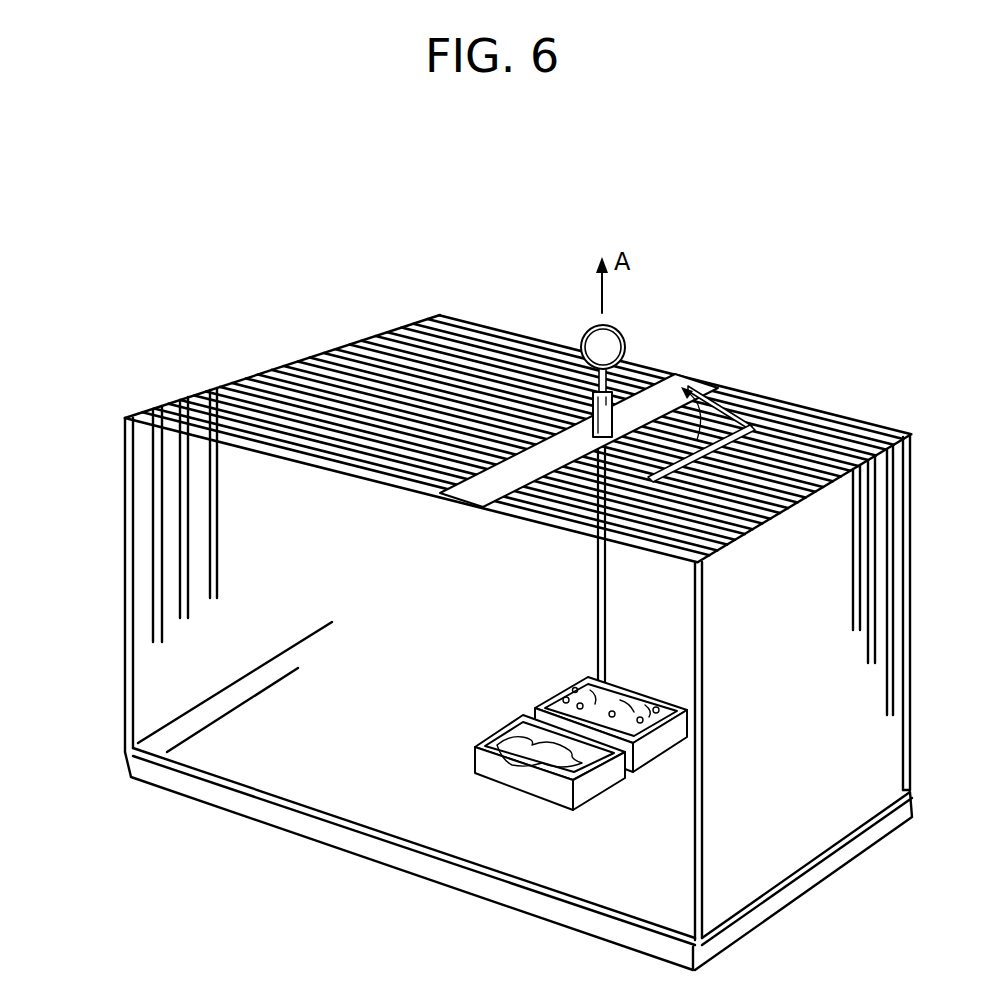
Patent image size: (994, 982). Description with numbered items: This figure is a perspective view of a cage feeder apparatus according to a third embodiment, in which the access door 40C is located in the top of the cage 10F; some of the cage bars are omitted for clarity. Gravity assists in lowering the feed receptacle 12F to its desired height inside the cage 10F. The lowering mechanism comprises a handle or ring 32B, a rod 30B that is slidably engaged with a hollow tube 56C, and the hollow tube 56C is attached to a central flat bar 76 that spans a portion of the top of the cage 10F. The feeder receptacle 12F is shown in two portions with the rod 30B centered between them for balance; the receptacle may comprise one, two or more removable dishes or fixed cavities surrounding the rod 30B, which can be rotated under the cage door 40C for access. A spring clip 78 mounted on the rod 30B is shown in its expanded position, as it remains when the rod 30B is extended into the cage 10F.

The cage 10F is at (472, 642).
The feed receptacle 12F is at (603, 783).
The rod 30B is at (598, 614).
The handle or ring 32B is at (585, 340).
The access door 40C is at (760, 402).
The hollow tube 56C is at (640, 378).
The central flat bar 76 is at (453, 500).
The spring clip 78 is at (632, 707).